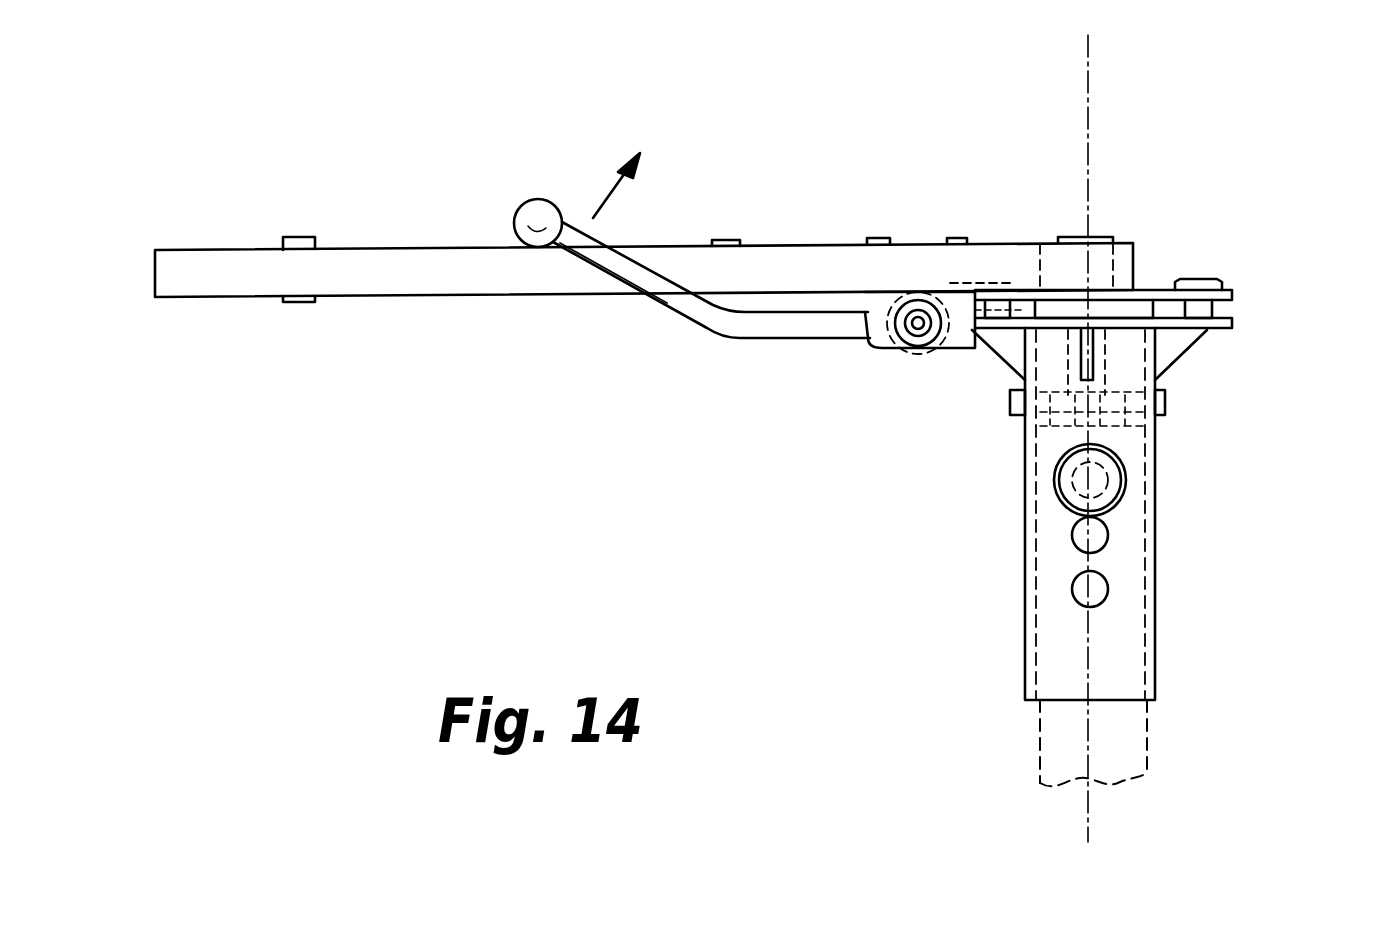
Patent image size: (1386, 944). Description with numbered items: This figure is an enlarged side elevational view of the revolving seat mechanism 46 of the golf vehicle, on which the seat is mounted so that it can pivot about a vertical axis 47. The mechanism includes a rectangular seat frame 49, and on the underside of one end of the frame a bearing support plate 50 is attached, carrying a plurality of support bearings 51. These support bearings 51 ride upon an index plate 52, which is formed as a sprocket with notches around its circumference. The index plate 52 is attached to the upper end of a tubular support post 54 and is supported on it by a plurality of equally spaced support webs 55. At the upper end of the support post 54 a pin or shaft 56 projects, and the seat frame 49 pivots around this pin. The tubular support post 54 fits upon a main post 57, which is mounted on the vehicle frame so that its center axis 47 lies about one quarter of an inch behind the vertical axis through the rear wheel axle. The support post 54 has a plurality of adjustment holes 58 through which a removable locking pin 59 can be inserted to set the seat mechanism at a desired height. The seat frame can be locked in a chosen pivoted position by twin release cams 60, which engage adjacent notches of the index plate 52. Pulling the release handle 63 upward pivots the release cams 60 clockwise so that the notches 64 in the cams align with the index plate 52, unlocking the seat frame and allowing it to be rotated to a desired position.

The revolving seat mechanism 46 is at (360, 151).
The vertical axis 47 is at (1088, 95).
The seat frame 49 is at (808, 250).
The bearing support plate 50 is at (1082, 300).
The support bearings 51 is at (1225, 280).
The index plate 52 is at (1232, 322).
The tubular support post 54 is at (1027, 573).
The support webs 55 is at (1002, 345).
The pin or shaft 56 is at (1100, 237).
The main post 57 is at (1147, 755).
The adjustment holes 58 is at (1100, 588).
The locking pin 59 is at (1058, 492).
The release cams 60 is at (877, 353).
The release handle 63 is at (662, 305).
The notches 64 is at (916, 292).